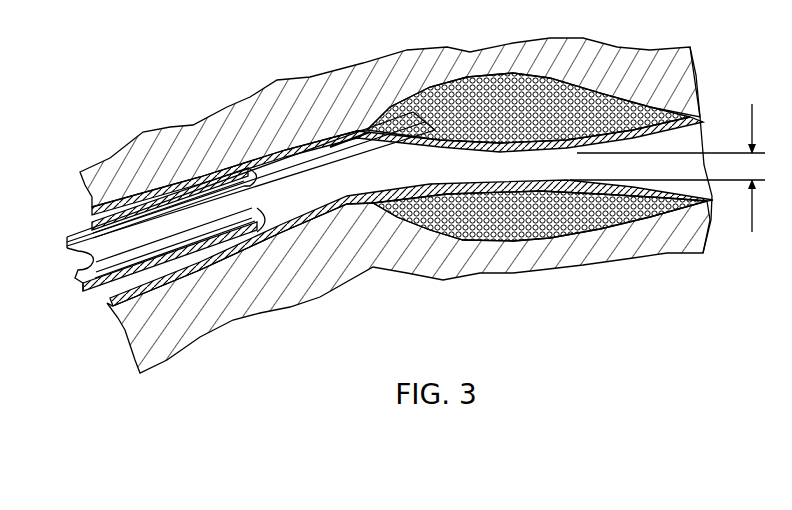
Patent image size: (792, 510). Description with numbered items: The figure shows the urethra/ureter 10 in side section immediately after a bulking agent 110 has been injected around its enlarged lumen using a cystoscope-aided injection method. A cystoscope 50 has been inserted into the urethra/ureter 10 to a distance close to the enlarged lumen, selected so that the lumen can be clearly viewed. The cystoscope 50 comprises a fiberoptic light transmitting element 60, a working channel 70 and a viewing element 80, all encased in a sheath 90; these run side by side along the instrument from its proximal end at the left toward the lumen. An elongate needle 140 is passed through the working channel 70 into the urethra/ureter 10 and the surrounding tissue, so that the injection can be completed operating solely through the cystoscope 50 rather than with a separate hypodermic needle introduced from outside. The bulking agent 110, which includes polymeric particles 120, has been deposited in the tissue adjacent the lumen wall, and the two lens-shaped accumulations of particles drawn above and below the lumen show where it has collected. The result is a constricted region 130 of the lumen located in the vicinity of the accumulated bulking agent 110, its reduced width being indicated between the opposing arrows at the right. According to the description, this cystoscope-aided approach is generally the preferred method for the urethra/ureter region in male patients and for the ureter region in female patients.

The urethra/ureter 10 is at (714, 192).
The cystoscope 50 is at (236, 207).
The fiberoptic light transmitting element 60 is at (187, 177).
The working channel 70 is at (345, 172).
The viewing element 80 is at (195, 256).
The sheath 90 is at (86, 296).
The bulking agent 110 is at (577, 84).
The polymeric particles 120 is at (533, 241).
The constricted region 130 is at (671, 156).
The elongate needle 140 is at (352, 143).